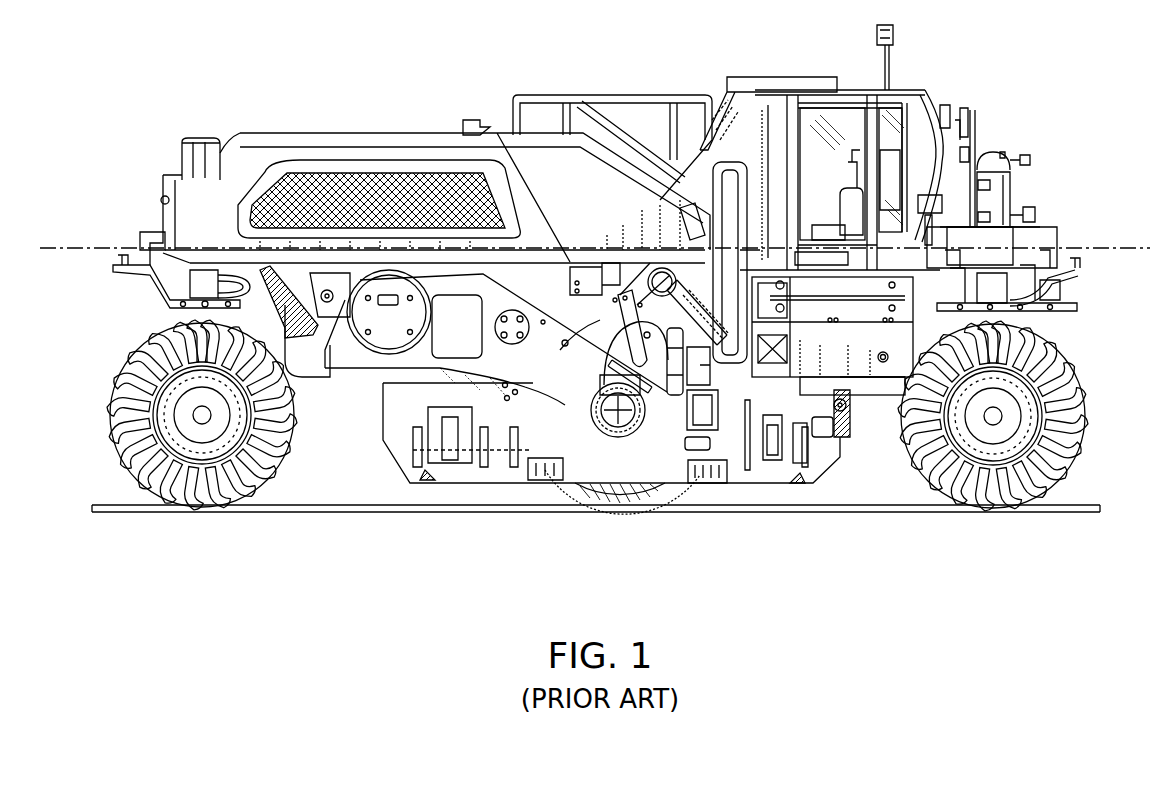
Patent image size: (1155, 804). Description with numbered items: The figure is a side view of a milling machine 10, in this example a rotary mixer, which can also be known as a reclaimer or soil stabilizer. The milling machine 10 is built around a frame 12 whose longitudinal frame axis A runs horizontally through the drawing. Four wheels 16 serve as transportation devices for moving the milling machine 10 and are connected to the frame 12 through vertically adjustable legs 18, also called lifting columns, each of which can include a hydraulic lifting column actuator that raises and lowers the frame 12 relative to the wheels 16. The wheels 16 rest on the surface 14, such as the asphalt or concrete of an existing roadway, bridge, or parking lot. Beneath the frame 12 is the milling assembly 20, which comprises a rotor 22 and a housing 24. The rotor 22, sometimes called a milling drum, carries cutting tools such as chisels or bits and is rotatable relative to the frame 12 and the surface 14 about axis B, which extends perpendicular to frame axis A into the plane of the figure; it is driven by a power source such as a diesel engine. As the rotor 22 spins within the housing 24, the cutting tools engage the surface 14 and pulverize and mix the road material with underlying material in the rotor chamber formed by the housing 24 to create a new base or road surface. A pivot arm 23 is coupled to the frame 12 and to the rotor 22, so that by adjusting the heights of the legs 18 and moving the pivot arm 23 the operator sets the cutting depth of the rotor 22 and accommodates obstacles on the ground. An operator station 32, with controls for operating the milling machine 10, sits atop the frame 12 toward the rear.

The milling machine 10 is at (528, 33).
The frame 12 is at (290, 277).
The surface 14 is at (250, 513).
The wheels 16 is at (110, 433).
The vertically adjustable legs 18 is at (170, 301).
The milling assembly 20 is at (499, 497).
The rotor 22 is at (622, 494).
The pivot arm 23 is at (503, 335).
The housing 24 is at (675, 467).
The operator station 32 is at (945, 104).
The frame axis A is at (63, 253).
The axis B is at (612, 418).